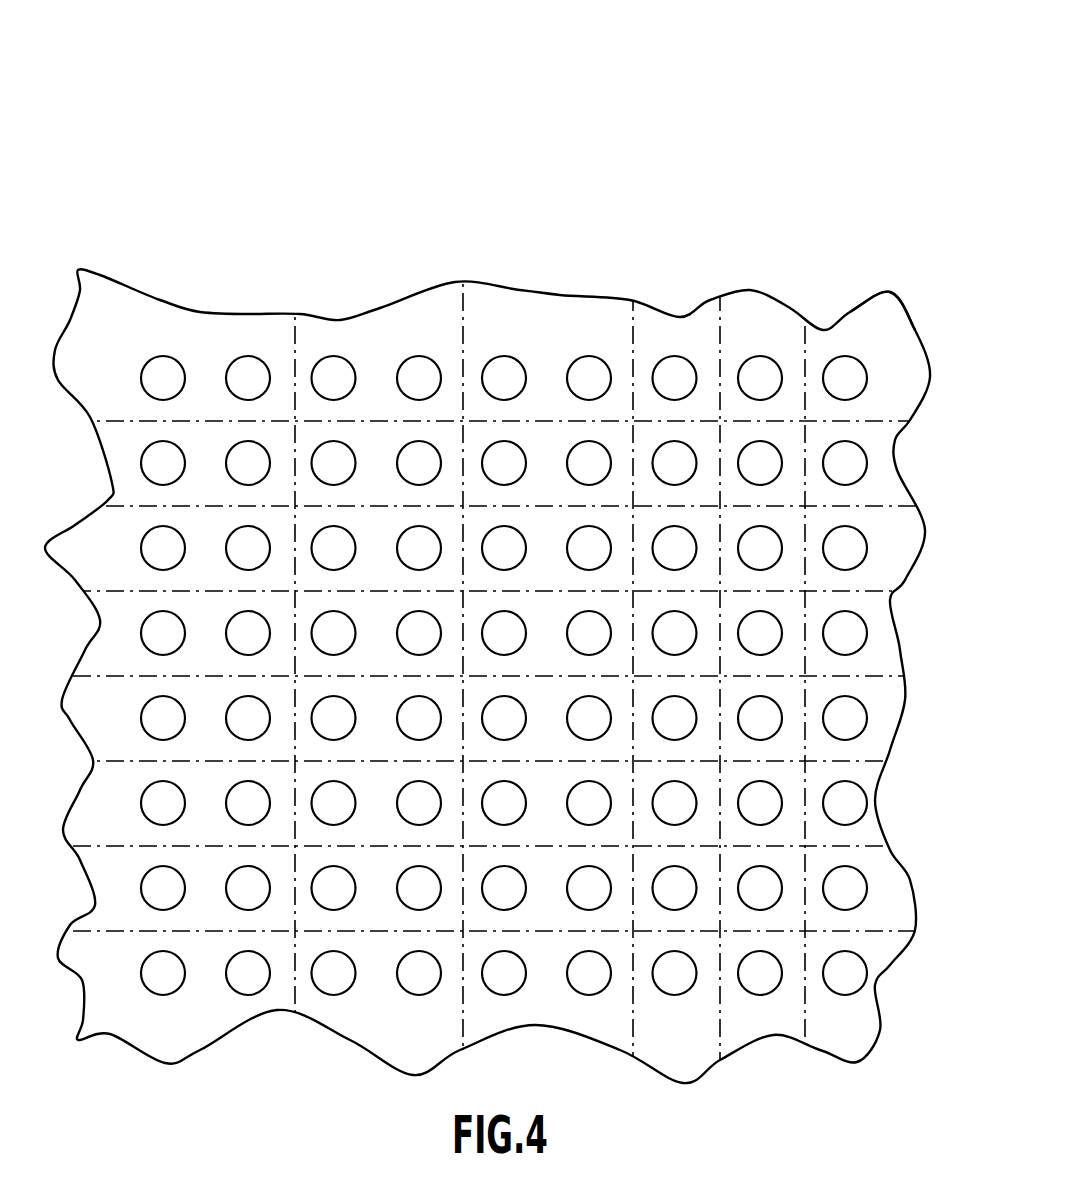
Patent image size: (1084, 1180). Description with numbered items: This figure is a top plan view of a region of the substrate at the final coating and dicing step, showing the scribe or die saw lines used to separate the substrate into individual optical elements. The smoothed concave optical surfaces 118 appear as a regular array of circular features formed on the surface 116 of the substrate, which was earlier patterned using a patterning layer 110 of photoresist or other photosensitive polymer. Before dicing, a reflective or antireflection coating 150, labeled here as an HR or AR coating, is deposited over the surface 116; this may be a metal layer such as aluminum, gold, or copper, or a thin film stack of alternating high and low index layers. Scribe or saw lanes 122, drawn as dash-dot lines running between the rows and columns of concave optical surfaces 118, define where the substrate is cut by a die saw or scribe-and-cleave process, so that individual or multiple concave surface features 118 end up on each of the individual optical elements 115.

The patterning layer 110 is at (833, 328).
The optical elements 115 is at (862, 482).
The surface of the substrate 116 is at (888, 356).
The concave optical surfaces 118 is at (584, 358).
The scribe or saw lanes 122 is at (205, 420).
The reflective or antireflection coating 150 is at (728, 182).